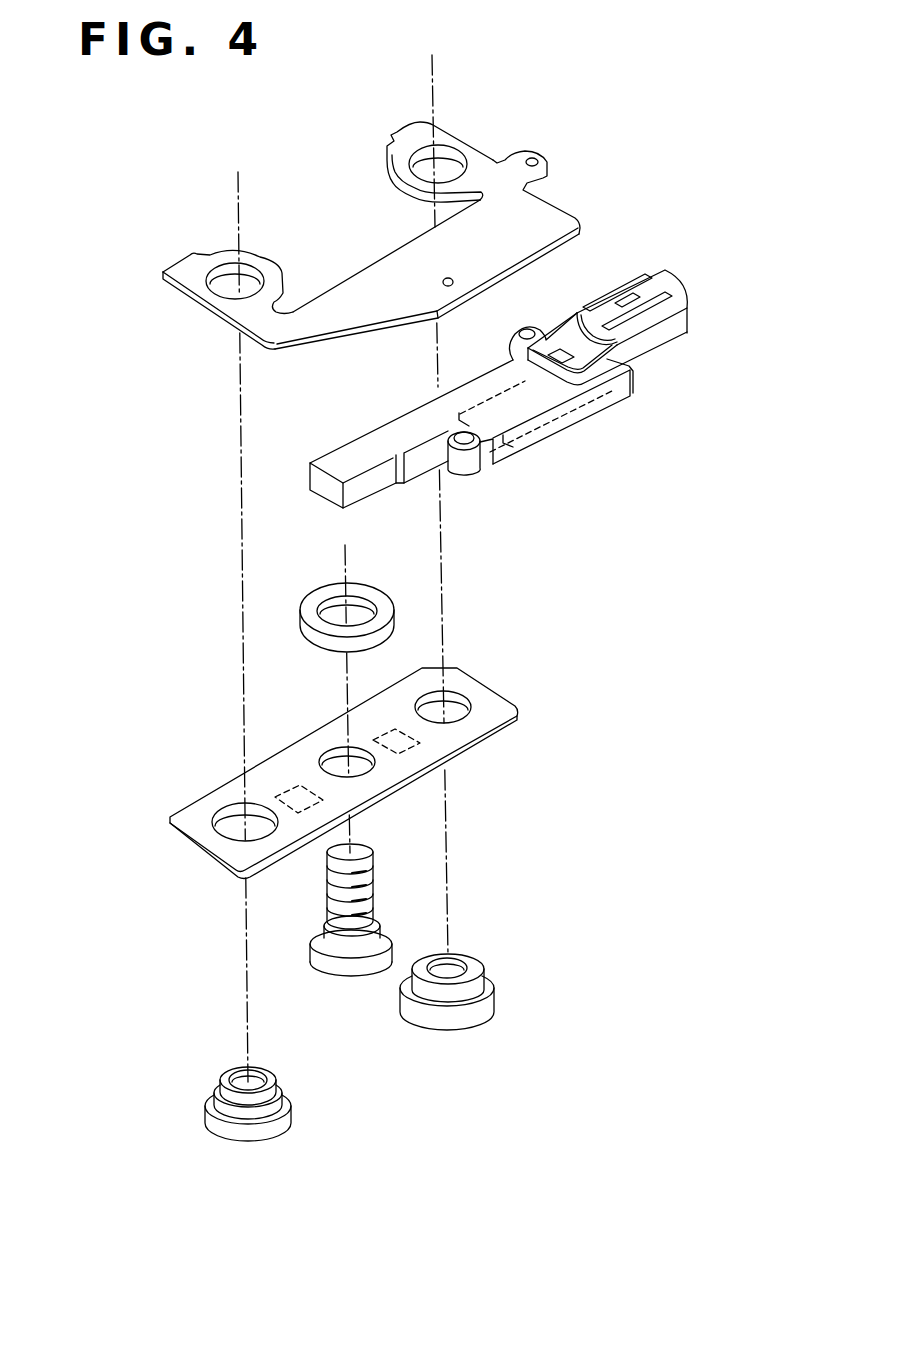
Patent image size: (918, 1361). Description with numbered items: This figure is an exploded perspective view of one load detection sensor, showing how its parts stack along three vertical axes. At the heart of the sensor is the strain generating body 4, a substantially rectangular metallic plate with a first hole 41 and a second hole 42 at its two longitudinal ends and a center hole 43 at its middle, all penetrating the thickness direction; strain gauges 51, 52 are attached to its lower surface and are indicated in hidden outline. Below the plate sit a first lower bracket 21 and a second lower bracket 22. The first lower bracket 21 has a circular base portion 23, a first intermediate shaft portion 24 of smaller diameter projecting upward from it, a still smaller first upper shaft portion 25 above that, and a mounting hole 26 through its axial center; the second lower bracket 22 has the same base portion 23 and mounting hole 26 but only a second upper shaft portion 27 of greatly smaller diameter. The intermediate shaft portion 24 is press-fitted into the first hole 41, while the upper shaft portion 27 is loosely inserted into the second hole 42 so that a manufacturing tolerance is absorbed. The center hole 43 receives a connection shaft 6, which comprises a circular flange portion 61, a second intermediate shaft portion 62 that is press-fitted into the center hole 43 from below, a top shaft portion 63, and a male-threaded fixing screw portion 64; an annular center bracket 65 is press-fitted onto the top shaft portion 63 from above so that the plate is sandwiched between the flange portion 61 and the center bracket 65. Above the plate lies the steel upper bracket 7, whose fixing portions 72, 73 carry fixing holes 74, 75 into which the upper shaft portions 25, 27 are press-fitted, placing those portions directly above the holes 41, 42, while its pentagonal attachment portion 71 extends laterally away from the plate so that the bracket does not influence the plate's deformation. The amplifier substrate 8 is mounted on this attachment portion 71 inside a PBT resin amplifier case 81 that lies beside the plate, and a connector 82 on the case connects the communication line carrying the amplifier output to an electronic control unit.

The strain generating body 4 is at (361, 751).
The first hole 41 is at (238, 817).
The second hole 42 is at (452, 703).
The center hole 43 is at (357, 772).
The strain gauge 51 is at (283, 787).
The strain gauge 52 is at (383, 732).
The connection shaft 6 is at (322, 940).
The flange portion 61 is at (358, 978).
The second intermediate shaft portion 62 is at (337, 963).
The top shaft portion 63 is at (330, 940).
The fixing screw portion 64 is at (337, 892).
The center bracket 65 is at (322, 595).
The upper bracket 7 is at (387, 206).
The attachment portion 71 is at (503, 247).
The fixing portion 72 is at (193, 272).
The fixing portion 73 is at (423, 128).
The fixing hole 74 is at (231, 277).
The fixing hole 75 is at (442, 163).
The amplifier substrate 8 is at (533, 389).
The amplifier case 81 is at (612, 388).
The connector 82 is at (657, 325).
The first lower bracket 21 is at (273, 1133).
The second lower bracket 22 is at (350, 1022).
The base portion 23 is at (448, 1022).
The first intermediate shaft portion 24 is at (273, 1110).
The first upper shaft portion 25 is at (237, 1102).
The mounting hole 26 is at (447, 965).
The second upper shaft portion 27 is at (473, 983).